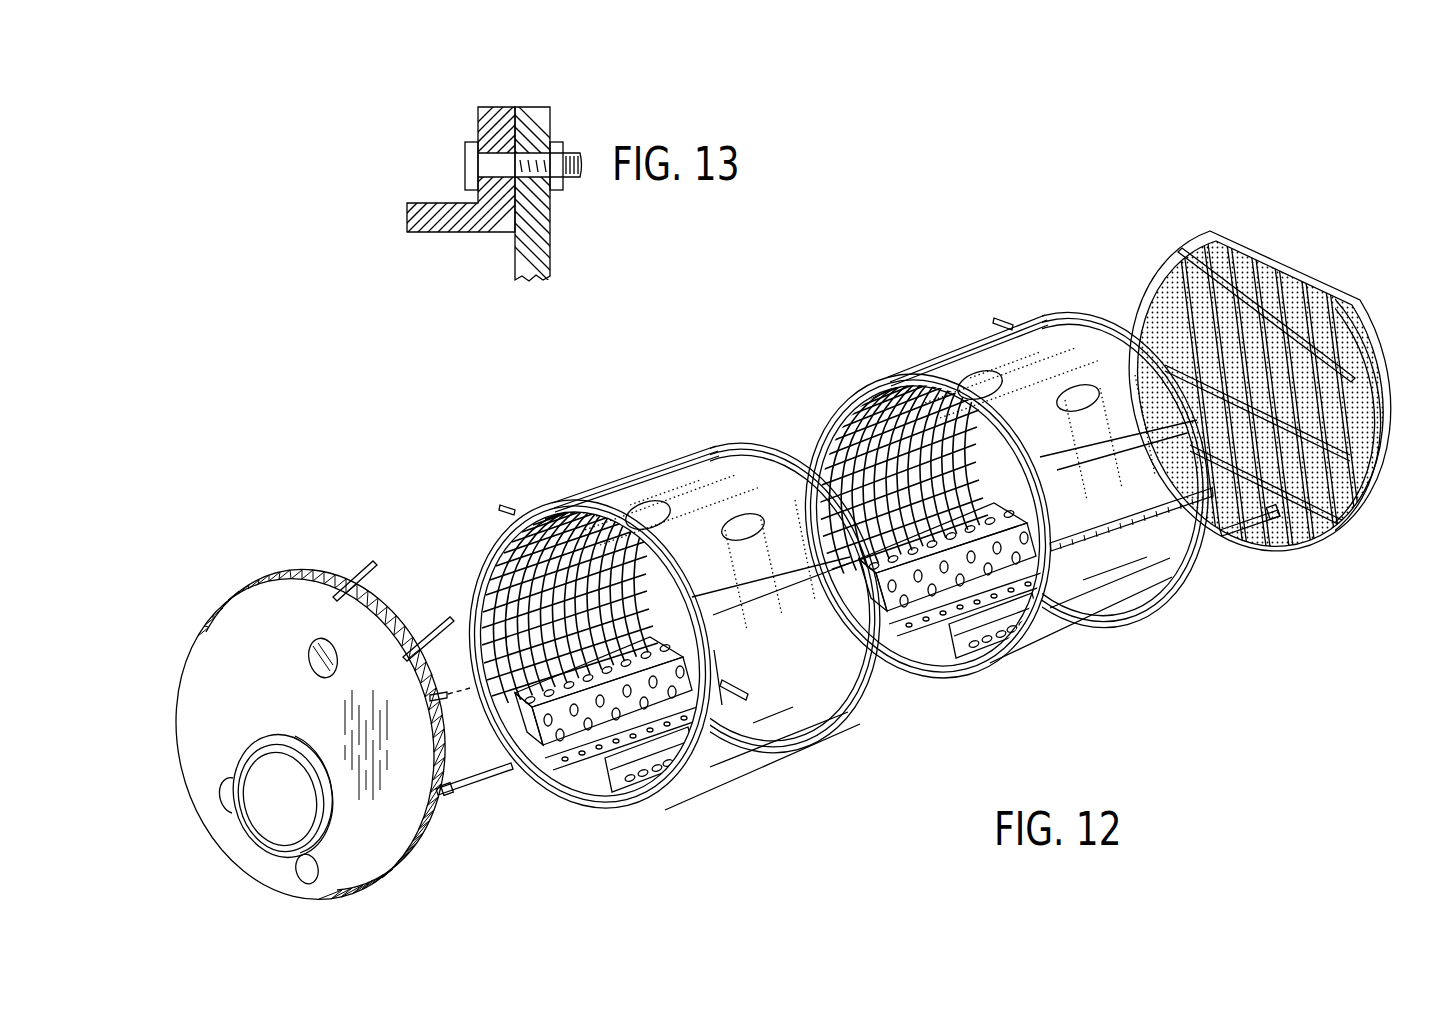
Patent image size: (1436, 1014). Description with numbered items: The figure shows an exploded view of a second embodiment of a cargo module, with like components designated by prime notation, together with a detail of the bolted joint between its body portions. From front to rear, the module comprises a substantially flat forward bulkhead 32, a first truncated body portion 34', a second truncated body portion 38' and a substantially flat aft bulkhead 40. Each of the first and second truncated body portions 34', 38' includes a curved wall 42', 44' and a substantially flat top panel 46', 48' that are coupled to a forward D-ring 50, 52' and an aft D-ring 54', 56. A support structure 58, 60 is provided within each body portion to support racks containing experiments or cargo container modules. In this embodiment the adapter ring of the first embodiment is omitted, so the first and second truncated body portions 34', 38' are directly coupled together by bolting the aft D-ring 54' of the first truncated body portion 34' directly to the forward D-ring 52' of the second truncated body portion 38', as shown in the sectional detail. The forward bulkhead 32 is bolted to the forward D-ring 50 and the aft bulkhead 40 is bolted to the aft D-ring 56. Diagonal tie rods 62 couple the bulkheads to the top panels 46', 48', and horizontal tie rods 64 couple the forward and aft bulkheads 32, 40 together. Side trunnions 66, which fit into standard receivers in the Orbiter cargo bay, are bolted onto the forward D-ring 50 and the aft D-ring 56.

In FIG. 12, the forward bulkhead 32 is at (259, 687).
In FIG. 12, the first truncated body portion 34' is at (687, 741).
In FIG. 12, the second truncated body portion 38' is at (1087, 650).
In FIG. 12, the aft bulkhead 40 is at (1217, 231).
In FIG. 12, the curved wall 42' is at (676, 604).
In FIG. 12, the curved wall 44' is at (1008, 518).
In FIG. 12, the top panel 46' is at (701, 538).
In FIG. 12, the top panel 48' is at (1042, 407).
In FIG. 12, the forward D-ring 50 is at (470, 590).
In FIG. 13, the forward D-ring 52' is at (551, 171).
In FIG. 12, the forward D-ring 52' is at (928, 552).
In FIG. 13, the aft D-ring 54' is at (470, 180).
In FIG. 12, the aft D-ring 54' is at (756, 614).
In FIG. 12, the aft D-ring 56 is at (1167, 607).
In FIG. 12, the support structure 58 is at (607, 783).
In FIG. 12, the support structure 60 is at (952, 655).
In FIG. 12, the diagonal tie rods 62 is at (407, 657).
In FIG. 12, the horizontal tie rods 64 is at (442, 702).
In FIG. 12, the side trunnions 66 is at (500, 508).